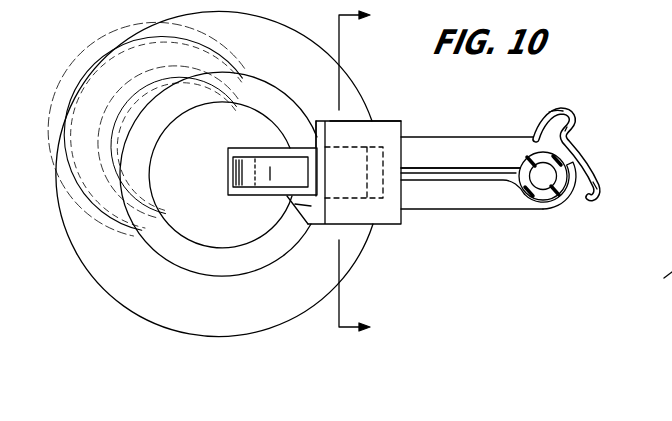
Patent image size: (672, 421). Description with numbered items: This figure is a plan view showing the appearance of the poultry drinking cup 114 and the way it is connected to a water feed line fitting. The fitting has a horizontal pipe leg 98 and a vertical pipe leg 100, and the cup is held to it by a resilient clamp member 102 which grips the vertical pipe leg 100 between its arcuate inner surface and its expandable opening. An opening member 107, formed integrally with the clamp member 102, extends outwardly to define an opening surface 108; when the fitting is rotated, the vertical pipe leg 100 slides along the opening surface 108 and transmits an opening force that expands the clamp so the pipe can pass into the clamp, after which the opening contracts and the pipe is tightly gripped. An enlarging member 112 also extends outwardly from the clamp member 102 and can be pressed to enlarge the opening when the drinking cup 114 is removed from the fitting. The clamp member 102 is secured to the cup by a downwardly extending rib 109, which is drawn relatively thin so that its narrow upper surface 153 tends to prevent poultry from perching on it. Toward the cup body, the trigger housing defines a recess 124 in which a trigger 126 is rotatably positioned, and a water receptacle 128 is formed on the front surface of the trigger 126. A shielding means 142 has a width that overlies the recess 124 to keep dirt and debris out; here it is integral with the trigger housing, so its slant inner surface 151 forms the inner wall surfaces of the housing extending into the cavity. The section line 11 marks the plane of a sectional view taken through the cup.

The section line 11- 11 is at (372, 175).
The horizontal pipe leg 98 is at (492, 136).
The vertical pipe leg 100 is at (547, 210).
The resilient clamp member 102 is at (579, 142).
The opening member 107 is at (566, 128).
The opening surface 108 is at (569, 110).
The downwardly extending rib 109 is at (472, 183).
The enlarging member 112 is at (605, 182).
The drinking cup 114 is at (671, 272).
The recess 124 is at (350, 187).
The trigger 126 is at (220, 177).
The water receptacle 128 is at (253, 177).
The shielding means 142 is at (386, 119).
The slant inner surface 151 is at (312, 130).
The narrow upper surface 153 is at (423, 173).